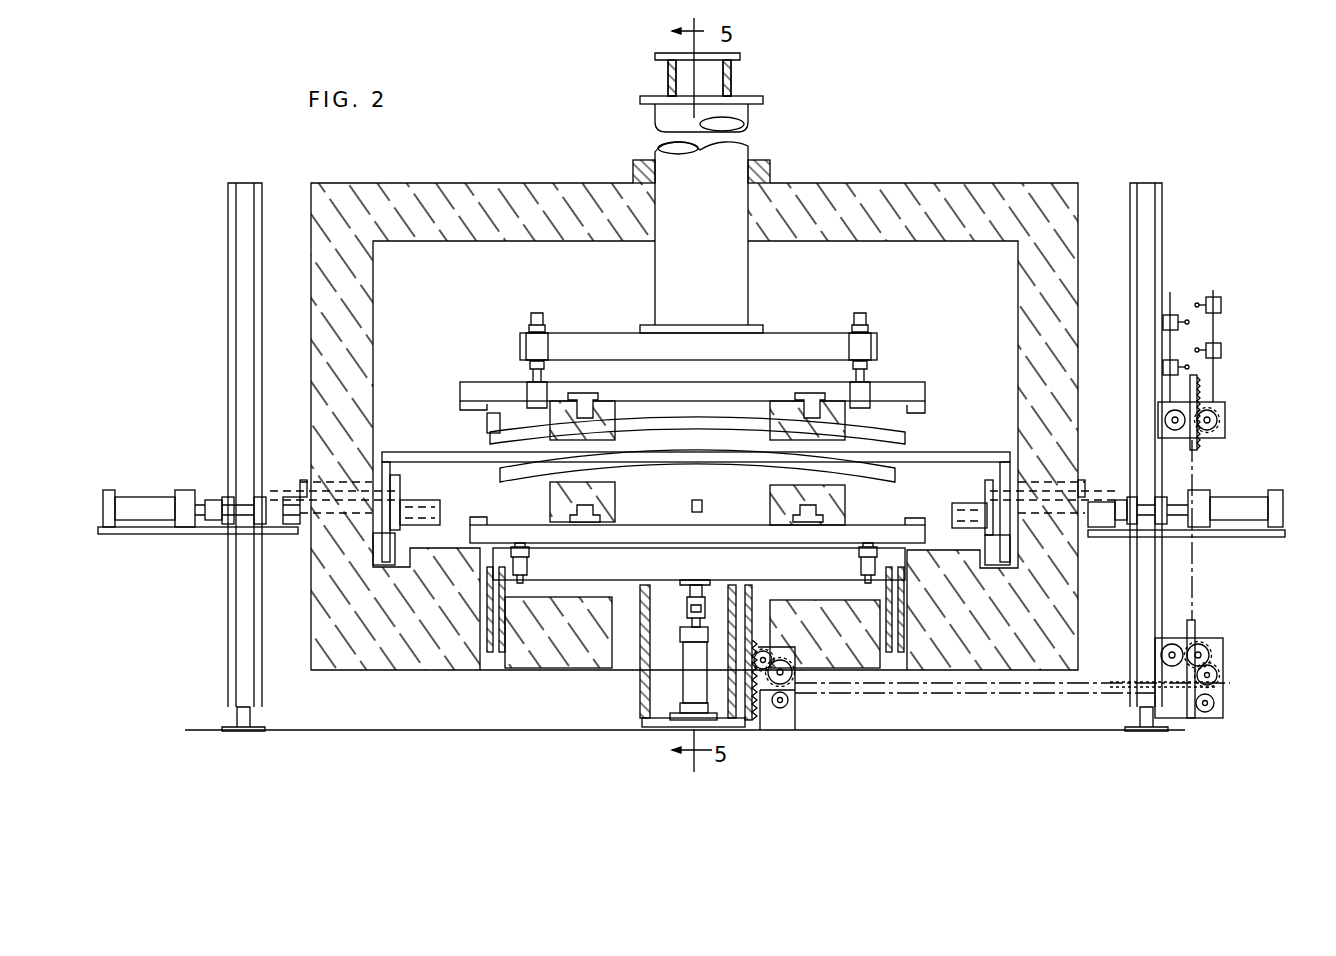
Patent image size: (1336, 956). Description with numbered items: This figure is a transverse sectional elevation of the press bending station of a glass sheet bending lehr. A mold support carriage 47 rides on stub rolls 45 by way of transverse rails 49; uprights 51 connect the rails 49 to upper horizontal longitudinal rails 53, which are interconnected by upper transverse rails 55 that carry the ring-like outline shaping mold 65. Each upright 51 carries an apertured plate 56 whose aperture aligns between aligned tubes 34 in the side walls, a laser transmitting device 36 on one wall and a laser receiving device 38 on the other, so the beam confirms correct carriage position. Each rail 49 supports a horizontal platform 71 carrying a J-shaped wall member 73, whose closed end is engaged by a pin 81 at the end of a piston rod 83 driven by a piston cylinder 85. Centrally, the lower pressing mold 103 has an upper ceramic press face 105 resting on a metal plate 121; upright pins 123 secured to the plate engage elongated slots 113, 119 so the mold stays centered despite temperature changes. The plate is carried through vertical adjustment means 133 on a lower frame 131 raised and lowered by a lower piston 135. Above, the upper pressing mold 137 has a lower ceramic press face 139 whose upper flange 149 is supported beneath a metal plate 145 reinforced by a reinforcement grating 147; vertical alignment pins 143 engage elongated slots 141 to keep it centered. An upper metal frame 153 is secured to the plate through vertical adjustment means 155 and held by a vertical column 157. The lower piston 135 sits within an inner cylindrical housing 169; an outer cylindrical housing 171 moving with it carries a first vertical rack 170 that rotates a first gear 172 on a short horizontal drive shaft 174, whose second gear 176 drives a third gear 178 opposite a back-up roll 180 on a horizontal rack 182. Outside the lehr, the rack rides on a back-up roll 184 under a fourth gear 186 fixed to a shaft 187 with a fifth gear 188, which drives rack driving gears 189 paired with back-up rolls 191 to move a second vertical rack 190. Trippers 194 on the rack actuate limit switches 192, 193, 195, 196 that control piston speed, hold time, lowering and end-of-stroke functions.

The tubes 34 is at (330, 482).
The laser transmitting device 36 is at (1082, 490).
The laser receiving device 38 is at (304, 480).
The stub rolls 45 is at (395, 540).
The mold support carriage 47 is at (1005, 450).
The rails 49 is at (1020, 545).
The uprights 51 is at (375, 450).
The upper horizontal longitudinal rails 53 is at (420, 452).
The upper transverse rails 55 is at (465, 452).
The apertured plate 56 is at (400, 477).
The outline shaping mold 65 is at (497, 428).
The horizontal platform 71 is at (985, 535).
The J-shaped wall member 73 is at (443, 508).
The pin 81 is at (302, 535).
The piston rod 83 is at (206, 500).
The piston cylinder 85 is at (146, 498).
The lower pressing mold 103 is at (906, 478).
The upper ceramic press face 105 is at (740, 483).
The elongated slot 113 is at (697, 500).
The elongated slot 119 is at (818, 495).
The metal plate 121 is at (737, 545).
The upright pins 123 is at (588, 505).
The lower frame 131 is at (617, 580).
The vertical adjustment means 133 is at (857, 552).
The lower piston 135 is at (683, 693).
The upper pressing mold 137 is at (888, 322).
The lower ceramic press face 139 is at (750, 448).
The elongated slots 141 is at (782, 416).
The vertical alignment pins 143 is at (598, 410).
The metal plate 145 is at (670, 395).
The reinforcement grating 147 is at (748, 392).
The upper flange 149 is at (920, 395).
The upper metal frame 153 is at (601, 343).
The vertical adjustment means 155 is at (528, 374).
The vertical column 157 is at (745, 297).
The inner cylindrical housing 169 is at (650, 675).
The first vertical rack 170 is at (750, 728).
The outer cylindrical housing 171 is at (745, 616).
The first gear 172 is at (786, 668).
The short horizontal drive shaft 174 is at (766, 656).
The second gear 176 is at (758, 648).
The third gear 178 is at (806, 681).
The back-up roll 180 is at (788, 705).
The horizontal rack 182 is at (920, 695).
The back-up roll 184 is at (1207, 712).
The fourth gear 186 is at (1218, 685).
The shaft 187 is at (1218, 667).
The fifth gear 188 is at (1215, 665).
The rack driving gears 189 is at (1217, 418).
The second vertical rack 190 is at (1190, 632).
The back-up roll 191 is at (1175, 432).
The limit switch 192 is at (1221, 352).
The limit switch 193 is at (1221, 305).
The tripper 194 is at (1197, 377).
The limit switch 195 is at (1163, 322).
The limit switch 196 is at (1163, 367).